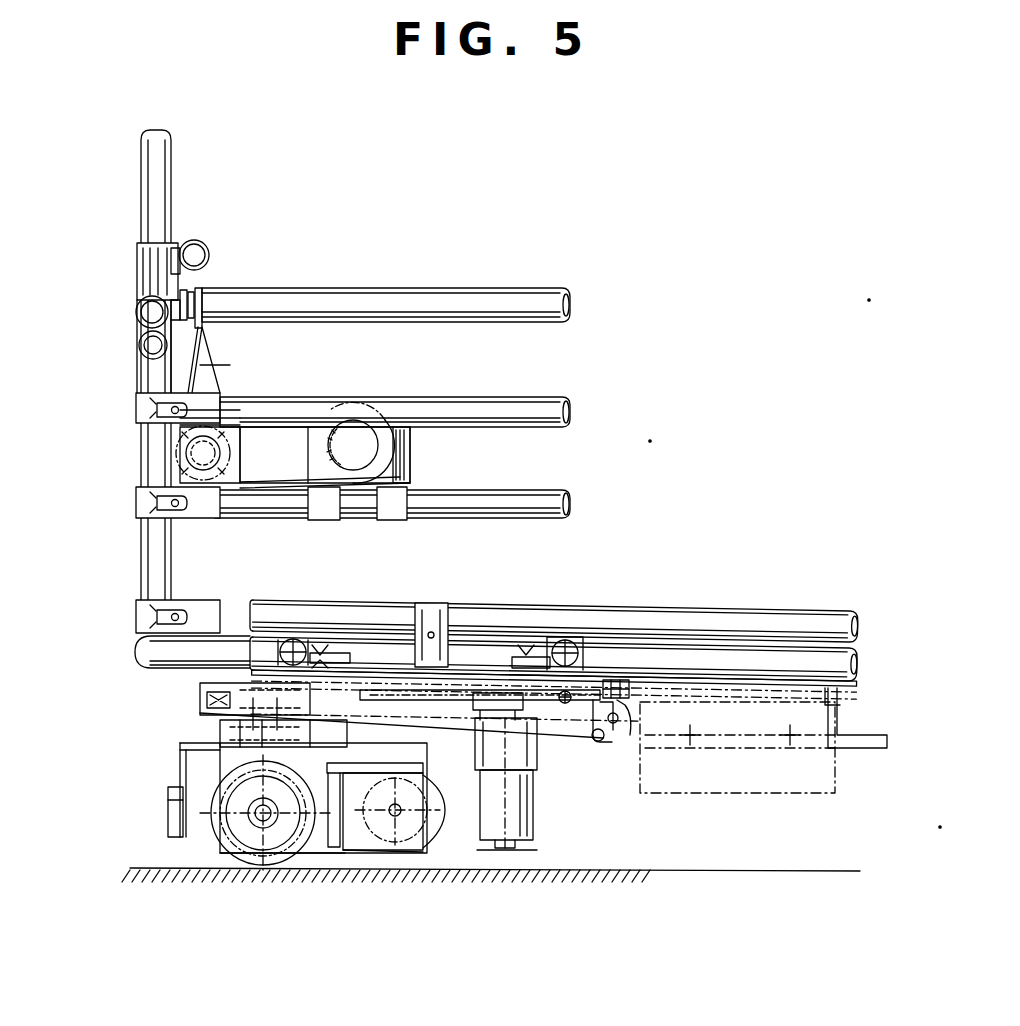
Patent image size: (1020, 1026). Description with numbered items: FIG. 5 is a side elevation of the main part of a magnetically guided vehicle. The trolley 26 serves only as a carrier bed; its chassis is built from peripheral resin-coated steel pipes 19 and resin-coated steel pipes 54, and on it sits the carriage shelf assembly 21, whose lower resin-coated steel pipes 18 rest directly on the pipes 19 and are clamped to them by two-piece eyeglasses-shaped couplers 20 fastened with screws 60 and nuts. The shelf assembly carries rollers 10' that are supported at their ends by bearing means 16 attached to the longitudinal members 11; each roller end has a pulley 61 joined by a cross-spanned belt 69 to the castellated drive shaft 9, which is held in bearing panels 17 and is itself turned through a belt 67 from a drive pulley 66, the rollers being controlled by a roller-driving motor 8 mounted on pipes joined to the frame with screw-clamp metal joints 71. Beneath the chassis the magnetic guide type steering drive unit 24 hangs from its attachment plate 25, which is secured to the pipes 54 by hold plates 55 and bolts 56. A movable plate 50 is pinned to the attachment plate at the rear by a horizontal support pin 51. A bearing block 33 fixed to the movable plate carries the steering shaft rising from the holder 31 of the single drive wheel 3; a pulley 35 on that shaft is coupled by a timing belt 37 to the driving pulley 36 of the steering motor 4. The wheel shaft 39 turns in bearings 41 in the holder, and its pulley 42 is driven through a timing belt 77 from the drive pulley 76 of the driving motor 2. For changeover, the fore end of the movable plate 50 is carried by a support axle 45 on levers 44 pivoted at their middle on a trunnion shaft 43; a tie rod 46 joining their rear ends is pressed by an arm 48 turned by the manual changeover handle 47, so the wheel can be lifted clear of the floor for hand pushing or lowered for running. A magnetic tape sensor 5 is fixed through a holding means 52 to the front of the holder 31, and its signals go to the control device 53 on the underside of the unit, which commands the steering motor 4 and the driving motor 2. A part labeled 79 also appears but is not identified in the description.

The driving motor 2 is at (455, 768).
The drive wheel 3 is at (266, 870).
The steering motor 4 is at (520, 868).
The magnetic tape sensor 5 is at (168, 833).
The roller-driving motor 8 is at (402, 438).
The drive shaft 9 is at (172, 453).
The roller 10' is at (386, 259).
The longitudinal member 11 is at (140, 302).
The bearing means 16 is at (163, 246).
The bearing panel 17 is at (172, 428).
The lower resin-coated steel pipe 18 is at (815, 615).
The peripheral resin-coated steel pipe 19 is at (822, 650).
The eyeglasses-shaped coupler 20 is at (455, 640).
The carriage shelf assembly 21 is at (133, 467).
The magnetic guide type steering drive unit 24 is at (500, 852).
The attachment plate 25 is at (745, 680).
The trolley 26 is at (133, 668).
The holder 31 is at (180, 770).
The bearing block 33 is at (200, 745).
The pulley 35 is at (263, 690).
The driving pulley 36 is at (540, 718).
The timing belt 37 is at (400, 690).
The shaft 39 is at (258, 815).
The bearing 41 is at (255, 828).
The pulley 42 is at (232, 840).
The trunnion shaft 43 is at (375, 668).
The lever 44 is at (585, 745).
The support axle 45 is at (205, 700).
The tie rod 46 is at (612, 740).
The changeover handle 47 is at (860, 750).
The arm 48 is at (615, 737).
The movable plate 50 is at (610, 688).
The support pin 51 is at (571, 693).
The holding means 52 is at (170, 790).
The control device 53 is at (745, 793).
The resin-coated steel pipe 54 is at (292, 648).
The hold plate 55 is at (320, 650).
The bolt 56 is at (332, 655).
The screw 60 is at (445, 665).
The pulley 61 is at (196, 290).
The drive pulley 66 is at (350, 445).
The belt 67 is at (292, 485).
The cross-spanned belt 69 is at (212, 362).
The metal joint 71 is at (400, 500).
The drive pulley 76 is at (415, 850).
The timing belt 77 is at (318, 845).
The top roller 79 is at (195, 240).